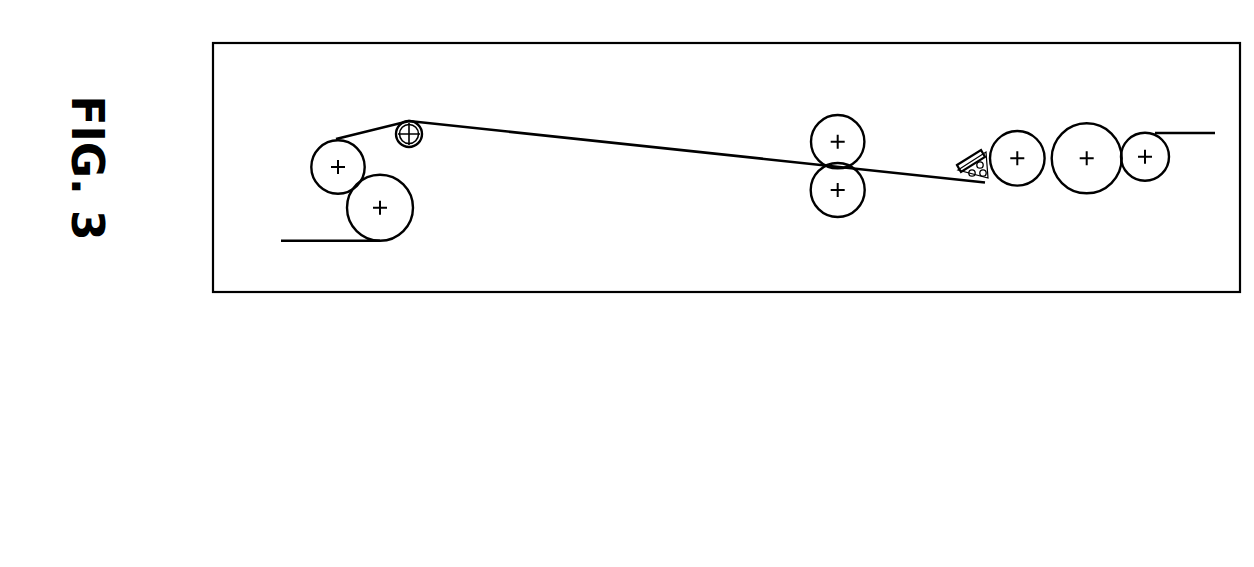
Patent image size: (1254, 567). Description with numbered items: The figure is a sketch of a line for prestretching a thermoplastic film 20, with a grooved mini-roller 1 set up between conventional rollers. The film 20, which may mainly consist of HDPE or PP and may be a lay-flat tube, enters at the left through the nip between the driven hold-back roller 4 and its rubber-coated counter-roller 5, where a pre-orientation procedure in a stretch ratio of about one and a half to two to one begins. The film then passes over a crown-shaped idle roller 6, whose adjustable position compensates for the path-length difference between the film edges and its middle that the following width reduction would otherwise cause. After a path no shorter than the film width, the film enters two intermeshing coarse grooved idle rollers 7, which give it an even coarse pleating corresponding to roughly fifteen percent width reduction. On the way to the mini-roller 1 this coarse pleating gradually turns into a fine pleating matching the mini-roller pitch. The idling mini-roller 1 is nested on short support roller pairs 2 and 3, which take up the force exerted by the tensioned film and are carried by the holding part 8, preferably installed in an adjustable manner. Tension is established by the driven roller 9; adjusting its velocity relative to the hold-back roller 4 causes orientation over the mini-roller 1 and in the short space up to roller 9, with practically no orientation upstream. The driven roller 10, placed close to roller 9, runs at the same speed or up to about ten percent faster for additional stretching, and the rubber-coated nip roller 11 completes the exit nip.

The mini-roller 1 is at (982, 183).
The support roller pair 2 is at (963, 173).
The support roller pair 3 is at (980, 155).
The driven hold-back roller 4 is at (318, 167).
The rubber-coated counter-roller 5 is at (403, 210).
The crown-shaped idle roller 6 is at (413, 121).
The intermeshing grooved idle rollers 7 is at (823, 128).
The holding part 8 is at (963, 170).
The driven roller 9 is at (1030, 170).
The driven roller 10 is at (1098, 173).
The rubber-coated nip roller 11 is at (1157, 163).
The thermoplastic film 20 is at (297, 235).